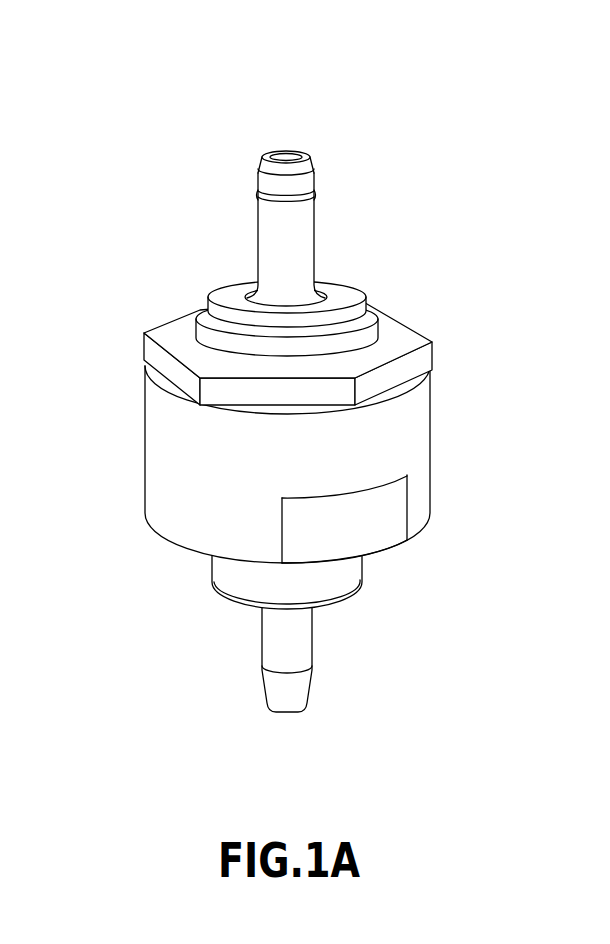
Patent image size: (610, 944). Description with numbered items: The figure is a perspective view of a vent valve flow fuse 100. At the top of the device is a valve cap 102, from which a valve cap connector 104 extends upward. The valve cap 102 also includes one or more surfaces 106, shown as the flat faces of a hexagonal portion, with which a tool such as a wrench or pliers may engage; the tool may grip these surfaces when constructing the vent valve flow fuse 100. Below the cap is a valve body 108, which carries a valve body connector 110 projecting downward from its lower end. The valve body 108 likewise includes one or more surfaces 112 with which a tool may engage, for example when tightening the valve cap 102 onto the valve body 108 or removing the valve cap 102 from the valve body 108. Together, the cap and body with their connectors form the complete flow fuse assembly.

The vent valve flow fuse 100 is at (207, 103).
The valve cap 102 is at (168, 312).
The valve cap connector 104 is at (293, 247).
The surfaces 106 is at (403, 340).
The valve body 108 is at (130, 512).
The valve body connector 110 is at (298, 643).
The surfaces 112 is at (415, 500).